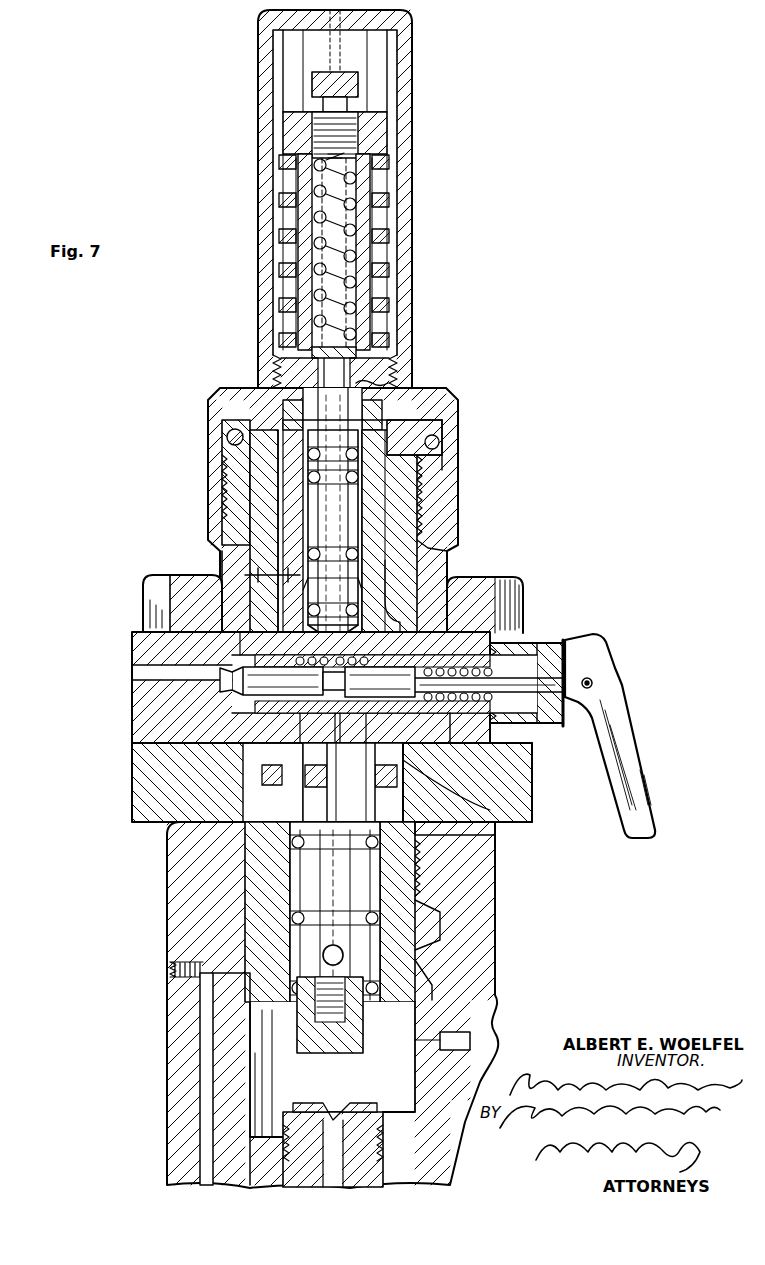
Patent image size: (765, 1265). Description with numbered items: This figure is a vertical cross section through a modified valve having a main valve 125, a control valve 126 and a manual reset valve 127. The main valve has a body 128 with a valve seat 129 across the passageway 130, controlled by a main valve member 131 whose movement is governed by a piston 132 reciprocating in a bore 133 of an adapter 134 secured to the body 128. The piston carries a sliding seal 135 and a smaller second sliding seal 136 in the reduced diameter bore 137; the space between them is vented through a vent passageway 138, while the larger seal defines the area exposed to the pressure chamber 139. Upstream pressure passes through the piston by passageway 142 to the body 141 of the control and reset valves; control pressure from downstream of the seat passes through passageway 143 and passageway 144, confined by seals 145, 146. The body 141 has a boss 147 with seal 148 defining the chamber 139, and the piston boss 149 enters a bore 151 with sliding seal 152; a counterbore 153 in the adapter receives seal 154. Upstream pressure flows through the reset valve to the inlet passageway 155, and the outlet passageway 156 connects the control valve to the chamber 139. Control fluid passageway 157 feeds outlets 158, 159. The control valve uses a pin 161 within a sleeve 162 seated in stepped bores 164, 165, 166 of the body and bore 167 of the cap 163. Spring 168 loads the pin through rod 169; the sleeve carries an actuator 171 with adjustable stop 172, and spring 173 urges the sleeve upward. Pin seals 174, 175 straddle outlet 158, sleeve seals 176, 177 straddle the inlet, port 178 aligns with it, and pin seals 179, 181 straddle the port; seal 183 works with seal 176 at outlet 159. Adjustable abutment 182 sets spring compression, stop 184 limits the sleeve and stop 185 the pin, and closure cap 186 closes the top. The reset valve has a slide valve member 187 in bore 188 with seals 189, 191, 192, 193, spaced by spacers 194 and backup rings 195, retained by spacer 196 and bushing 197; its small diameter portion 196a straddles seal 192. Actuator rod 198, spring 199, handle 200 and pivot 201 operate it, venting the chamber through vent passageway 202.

The main valve 125 is at (150, 998).
The control valve 126 is at (442, 364).
The manual selector or reset valve 127 is at (594, 628).
The main valve body 128 is at (480, 972).
The valve seat 129 is at (345, 1102).
The passageway 130 is at (470, 1050).
The main valve member 131 is at (320, 1040).
The piston 132 is at (400, 866).
The bore 133 is at (440, 882).
The adapter 134 is at (442, 896).
The sliding seal 135 is at (442, 842).
The second sliding seal 136 is at (180, 906).
The reduced diameter bore 137 is at (348, 962).
The vent passageway 138 is at (452, 902).
The pressure chamber 139 is at (452, 826).
The body 141 is at (240, 710).
The passageway 142 is at (330, 878).
The passageway 143 is at (212, 1092).
The passageway 144 is at (232, 800).
The seal 145 is at (432, 950).
The seal 146 is at (364, 1020).
The boss 147 is at (268, 748).
The seal 148 is at (258, 774).
The boss 149 is at (358, 800).
The bore 151 is at (440, 760).
The sliding seal 152 is at (380, 757).
The counterbore 153 is at (500, 762).
The seal 154 is at (480, 788).
The inlet passageway 155 is at (422, 584).
The outlet passageway 156 is at (320, 574).
The control fluid passageway 157 is at (255, 592).
The passageway 158 is at (266, 590).
The passageway 159 is at (250, 468).
The pin 161 is at (336, 524).
The sleeve 162 is at (410, 432).
The cap 163 is at (236, 390).
The stepped bore 164 is at (348, 587).
The stepped bore 165 is at (440, 521).
The stepped bore 166 is at (394, 506).
The bore 167 is at (370, 385).
The spring 168 is at (345, 272).
The rod 169 is at (330, 392).
The actuator or extension 171 is at (368, 246).
The adjustable stop 172 is at (410, 124).
The spring 173 is at (358, 210).
The seal 174 is at (394, 602).
The sliding seal 175 is at (447, 541).
The seal 176 is at (438, 448).
The seal 177 is at (441, 492).
The passageway 178 is at (415, 462).
The sliding seal 179 is at (237, 434).
The sliding seal 181 is at (265, 492).
The adjustable abutment 182 is at (356, 88).
The sliding seal 183 is at (416, 410).
The stop 184 is at (265, 522).
The stop 185 is at (245, 642).
The closure cap 186 is at (400, 47).
The slide valve member 187 is at (412, 690).
The bore 188 is at (472, 705).
The seal 189 is at (240, 700).
The seal 191 is at (308, 730).
The seal 192 is at (358, 730).
The seal 193 is at (401, 634).
The spacer 194 is at (302, 660).
The backup ring 195 is at (368, 660).
The spacer 196 is at (492, 642).
The small diameter portion 196a is at (320, 684).
The bushing 197 is at (556, 637).
The actuator rod 198 is at (544, 724).
The spring 199 is at (430, 660).
The handle 200 is at (625, 742).
The pivot 201 is at (592, 683).
The vent passageway 202 is at (225, 672).